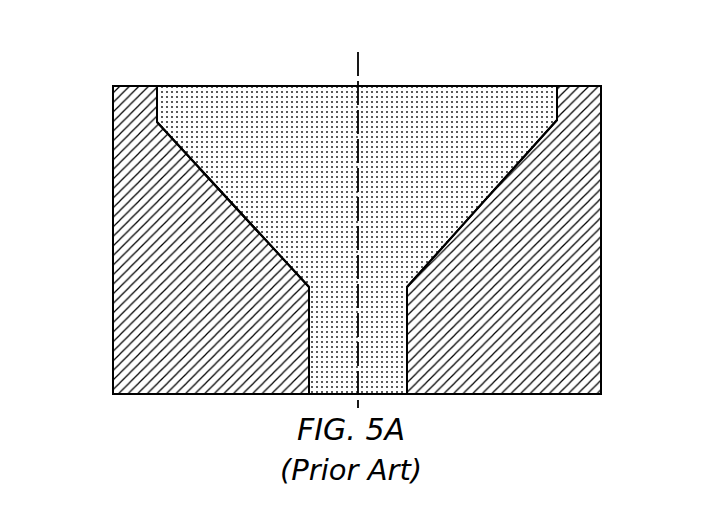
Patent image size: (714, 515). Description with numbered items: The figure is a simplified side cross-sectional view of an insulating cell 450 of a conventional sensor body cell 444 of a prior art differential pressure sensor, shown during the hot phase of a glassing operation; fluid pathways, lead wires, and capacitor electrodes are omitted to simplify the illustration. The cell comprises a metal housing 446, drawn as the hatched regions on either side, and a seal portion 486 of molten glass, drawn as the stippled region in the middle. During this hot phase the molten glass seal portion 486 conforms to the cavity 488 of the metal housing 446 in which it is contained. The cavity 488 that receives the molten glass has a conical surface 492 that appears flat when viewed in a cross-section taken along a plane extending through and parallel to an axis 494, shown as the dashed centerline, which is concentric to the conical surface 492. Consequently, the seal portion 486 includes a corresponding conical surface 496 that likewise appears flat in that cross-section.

The sensor body cell 444 is at (112, 46).
The metal housing 446 is at (122, 175).
The insulating cell 450 is at (490, 163).
The seal portion 486 is at (476, 110).
The cavity 488 is at (288, 112).
The conical surface 492 is at (270, 235).
The axis 494 is at (359, 66).
The conical surface 496 is at (252, 245).